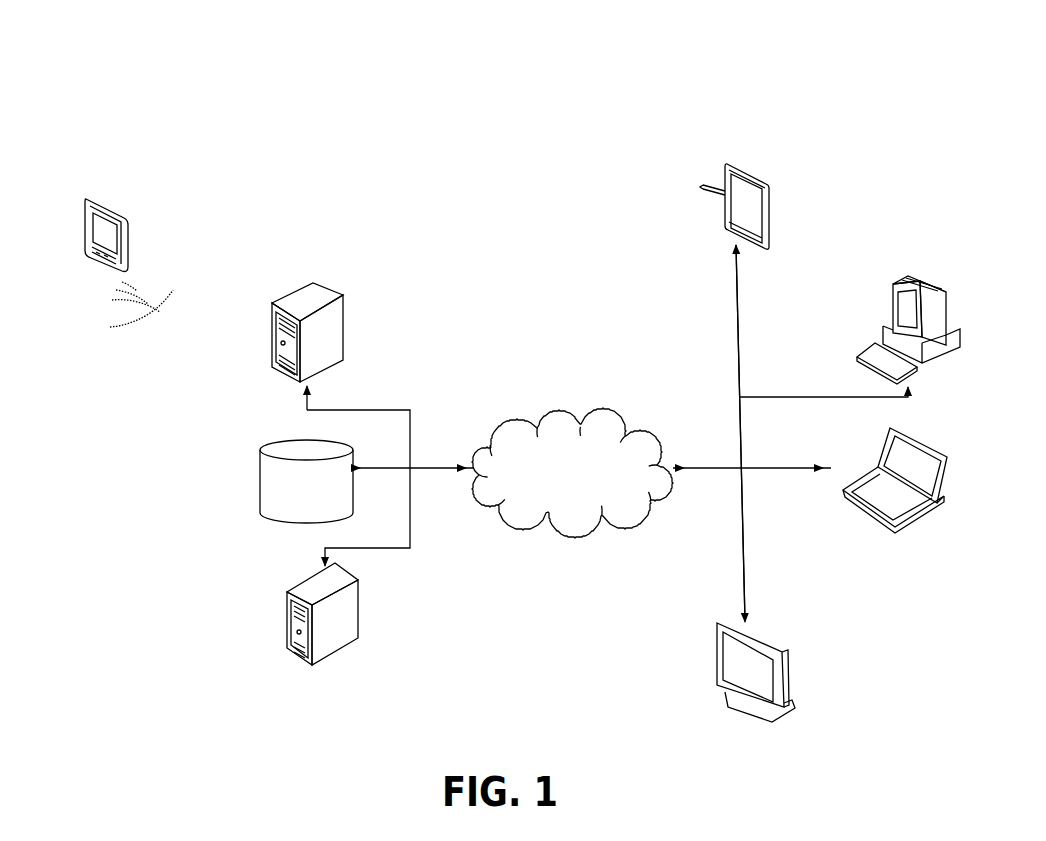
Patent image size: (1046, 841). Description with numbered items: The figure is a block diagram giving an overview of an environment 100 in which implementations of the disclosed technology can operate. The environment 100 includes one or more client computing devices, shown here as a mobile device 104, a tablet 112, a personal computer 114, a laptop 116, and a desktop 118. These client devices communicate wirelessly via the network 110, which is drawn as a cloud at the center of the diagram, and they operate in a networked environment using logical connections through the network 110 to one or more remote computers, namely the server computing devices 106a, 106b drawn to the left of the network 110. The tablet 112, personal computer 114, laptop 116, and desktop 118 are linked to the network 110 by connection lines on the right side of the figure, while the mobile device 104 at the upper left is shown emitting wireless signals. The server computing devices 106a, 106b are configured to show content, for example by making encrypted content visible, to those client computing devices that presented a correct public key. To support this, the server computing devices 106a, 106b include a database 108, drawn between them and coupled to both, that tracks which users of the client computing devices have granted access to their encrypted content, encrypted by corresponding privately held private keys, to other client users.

The environment 100 is at (742, 44).
The mobile device 104 is at (108, 199).
The server computing device 106a is at (284, 299).
The server computing device 106b is at (289, 637).
The database 108 is at (260, 487).
The network 110 is at (548, 412).
The tablet 112 is at (745, 165).
The personal computer 114 is at (903, 283).
The laptop 116 is at (878, 520).
The desktop 118 is at (784, 658).